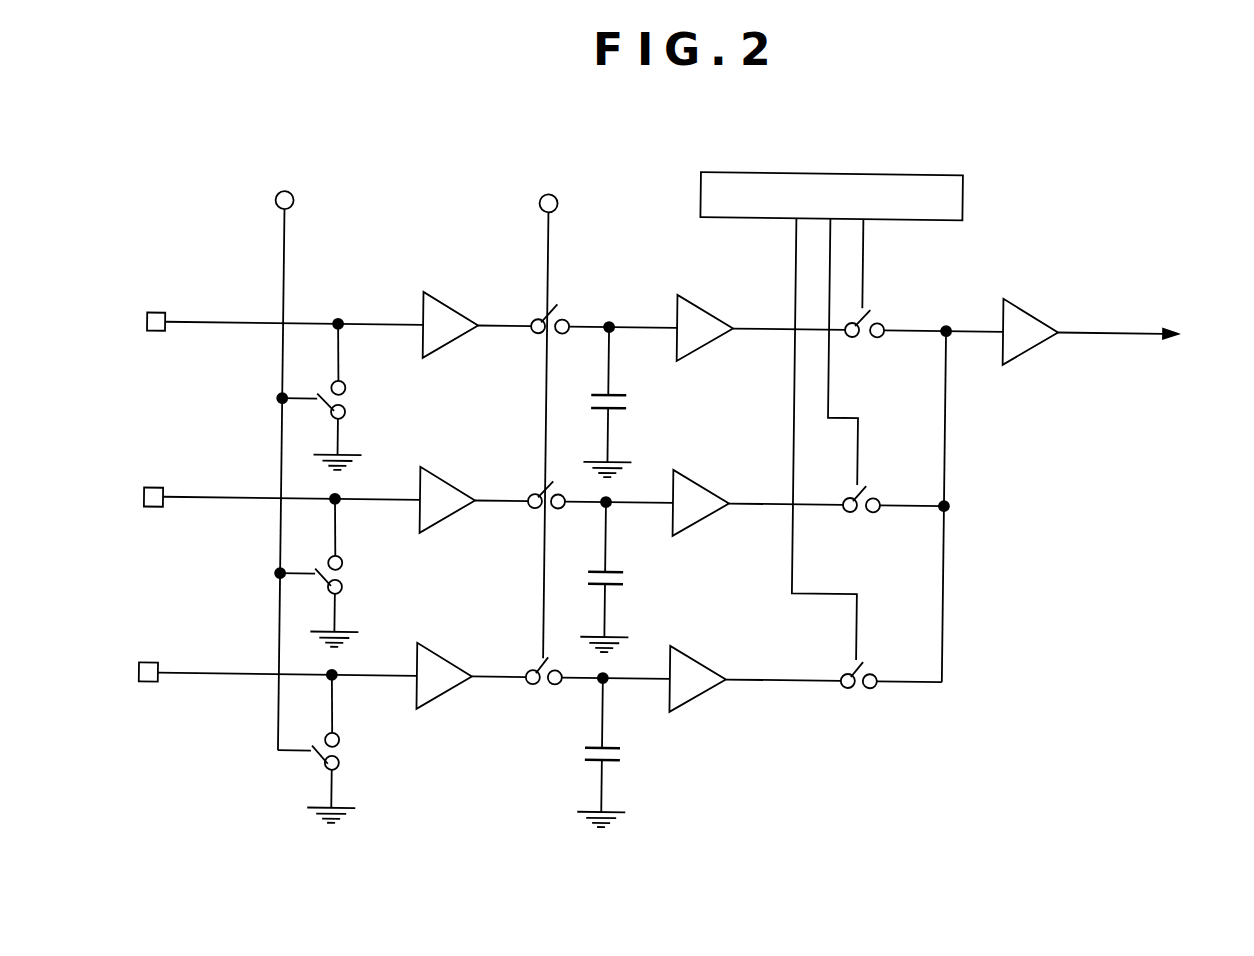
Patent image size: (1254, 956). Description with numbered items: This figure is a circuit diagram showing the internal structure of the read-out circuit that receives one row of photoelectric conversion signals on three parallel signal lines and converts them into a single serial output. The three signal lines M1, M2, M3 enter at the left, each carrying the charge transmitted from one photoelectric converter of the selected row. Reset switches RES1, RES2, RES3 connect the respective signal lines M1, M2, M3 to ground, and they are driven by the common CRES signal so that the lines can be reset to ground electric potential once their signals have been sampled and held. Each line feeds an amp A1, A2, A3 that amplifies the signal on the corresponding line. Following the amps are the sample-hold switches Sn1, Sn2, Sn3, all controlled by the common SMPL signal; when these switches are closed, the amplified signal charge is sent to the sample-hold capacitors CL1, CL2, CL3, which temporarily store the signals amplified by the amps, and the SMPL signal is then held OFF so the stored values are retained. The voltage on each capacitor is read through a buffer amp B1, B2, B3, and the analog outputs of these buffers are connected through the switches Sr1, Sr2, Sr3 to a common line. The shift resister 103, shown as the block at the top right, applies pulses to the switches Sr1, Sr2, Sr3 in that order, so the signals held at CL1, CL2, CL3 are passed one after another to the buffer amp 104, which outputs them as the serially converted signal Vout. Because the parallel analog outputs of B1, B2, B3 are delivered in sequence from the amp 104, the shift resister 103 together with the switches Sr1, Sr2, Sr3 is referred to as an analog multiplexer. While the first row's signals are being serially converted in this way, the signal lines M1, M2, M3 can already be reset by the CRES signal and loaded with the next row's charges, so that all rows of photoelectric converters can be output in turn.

The shift resister 103 is at (959, 192).
The buffer amp 104 is at (1030, 307).
The CRES signal CRES is at (283, 452).
The SMPL signal SMPL is at (548, 410).
The signal line M1 is at (285, 312).
The signal line M2 is at (282, 488).
The signal line M3 is at (278, 662).
The amp A1 is at (451, 316).
The amp A2 is at (448, 491).
The amp A3 is at (444, 666).
The sample-hold switch Sn1 is at (534, 334).
The sample-hold switch Sn2 is at (530, 511).
The sample-hold switch Sn3 is at (527, 686).
The sample-hold capacitor CL1 is at (632, 402).
The sample-hold capacitor CL2 is at (629, 577).
The sample-hold capacitor CL3 is at (627, 753).
The buffer amp B1 is at (705, 319).
The buffer amp B2 is at (702, 494).
The buffer amp B3 is at (698, 671).
The switch Sr1 is at (881, 320).
The switch Sr2 is at (878, 495).
The switch Sr3 is at (875, 670).
The reset switch RES1 is at (347, 397).
The reset switch RES2 is at (344, 573).
The reset switch RES3 is at (340, 748).
The output Vout is at (1143, 336).